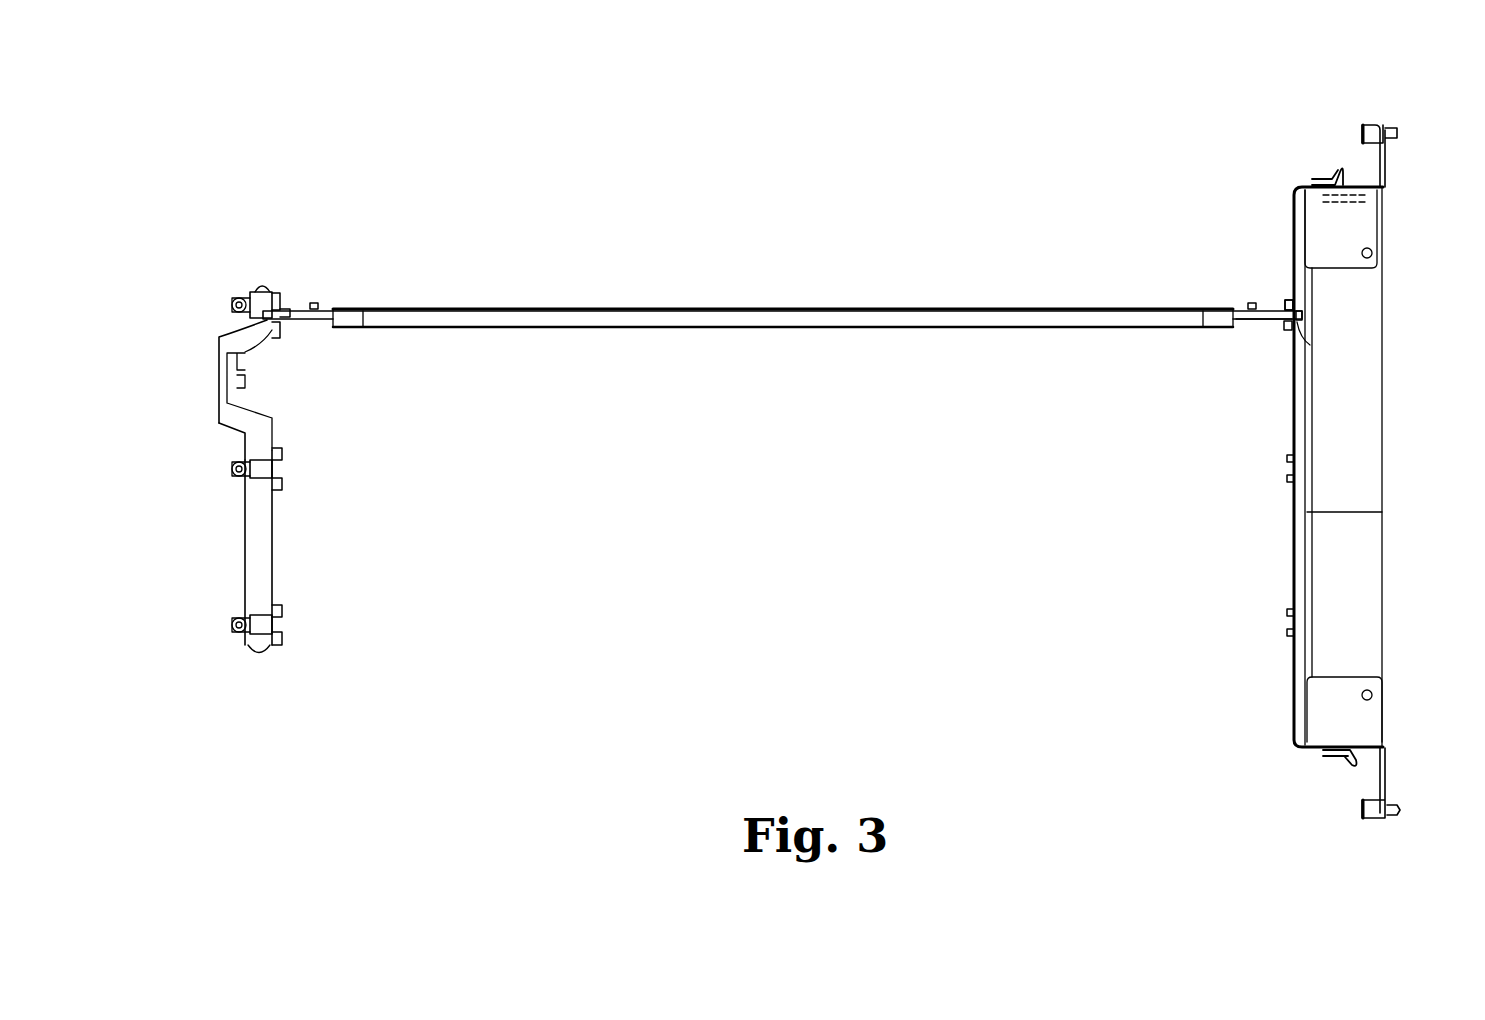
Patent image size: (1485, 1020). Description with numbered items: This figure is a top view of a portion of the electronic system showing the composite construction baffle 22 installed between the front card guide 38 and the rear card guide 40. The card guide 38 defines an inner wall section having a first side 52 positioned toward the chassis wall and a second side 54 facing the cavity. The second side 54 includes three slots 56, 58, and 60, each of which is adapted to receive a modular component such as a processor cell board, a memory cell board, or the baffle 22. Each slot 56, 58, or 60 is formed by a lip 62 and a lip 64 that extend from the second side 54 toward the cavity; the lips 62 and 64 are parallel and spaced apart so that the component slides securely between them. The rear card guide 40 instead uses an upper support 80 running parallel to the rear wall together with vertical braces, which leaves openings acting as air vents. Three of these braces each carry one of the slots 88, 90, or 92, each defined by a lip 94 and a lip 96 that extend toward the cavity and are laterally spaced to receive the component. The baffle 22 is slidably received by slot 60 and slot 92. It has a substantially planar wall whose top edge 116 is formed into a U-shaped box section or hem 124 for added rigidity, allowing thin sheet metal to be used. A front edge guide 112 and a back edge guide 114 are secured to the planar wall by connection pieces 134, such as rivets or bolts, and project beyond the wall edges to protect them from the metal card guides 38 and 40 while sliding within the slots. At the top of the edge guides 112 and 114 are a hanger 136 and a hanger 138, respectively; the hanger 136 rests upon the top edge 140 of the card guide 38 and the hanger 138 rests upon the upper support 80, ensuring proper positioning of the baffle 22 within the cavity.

The composite construction baffle 22 is at (712, 306).
The card guide 38 is at (1338, 471).
The rear card guide 40 is at (254, 454).
The first side 52 is at (1383, 512).
The second side 54 is at (1295, 556).
The slot 56 is at (1288, 622).
The slot 58 is at (1288, 470).
The slot 60 is at (1282, 322).
The lip 62 is at (1288, 331).
The lip 64 is at (1290, 300).
The upper support 80 is at (262, 544).
The slot 88 is at (274, 624).
The slot 90 is at (274, 468).
The slot 92 is at (284, 318).
The lip 94 is at (278, 338).
The lip 96 is at (277, 295).
The front edge guide 112 is at (1284, 302).
The back edge guide 114 is at (292, 313).
The top edge 116 is at (507, 318).
The box section or hem 124 is at (932, 320).
The connection pieces 134 is at (318, 303).
The tab or hanger 136 is at (1303, 315).
The tab or hanger 138 is at (220, 338).
The top edge 140 is at (1305, 330).